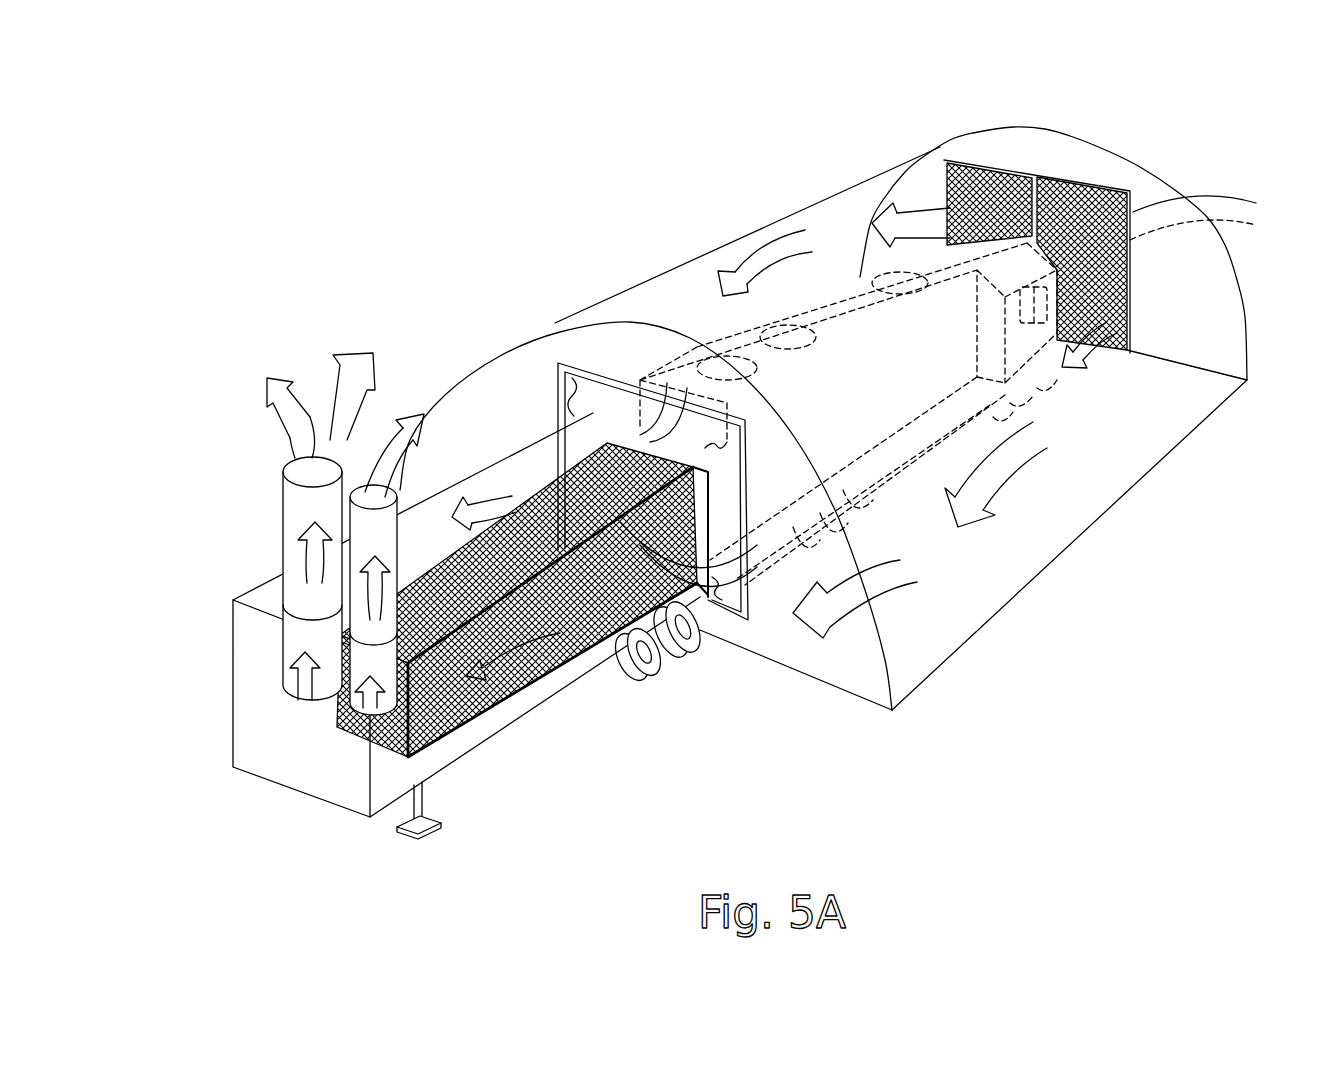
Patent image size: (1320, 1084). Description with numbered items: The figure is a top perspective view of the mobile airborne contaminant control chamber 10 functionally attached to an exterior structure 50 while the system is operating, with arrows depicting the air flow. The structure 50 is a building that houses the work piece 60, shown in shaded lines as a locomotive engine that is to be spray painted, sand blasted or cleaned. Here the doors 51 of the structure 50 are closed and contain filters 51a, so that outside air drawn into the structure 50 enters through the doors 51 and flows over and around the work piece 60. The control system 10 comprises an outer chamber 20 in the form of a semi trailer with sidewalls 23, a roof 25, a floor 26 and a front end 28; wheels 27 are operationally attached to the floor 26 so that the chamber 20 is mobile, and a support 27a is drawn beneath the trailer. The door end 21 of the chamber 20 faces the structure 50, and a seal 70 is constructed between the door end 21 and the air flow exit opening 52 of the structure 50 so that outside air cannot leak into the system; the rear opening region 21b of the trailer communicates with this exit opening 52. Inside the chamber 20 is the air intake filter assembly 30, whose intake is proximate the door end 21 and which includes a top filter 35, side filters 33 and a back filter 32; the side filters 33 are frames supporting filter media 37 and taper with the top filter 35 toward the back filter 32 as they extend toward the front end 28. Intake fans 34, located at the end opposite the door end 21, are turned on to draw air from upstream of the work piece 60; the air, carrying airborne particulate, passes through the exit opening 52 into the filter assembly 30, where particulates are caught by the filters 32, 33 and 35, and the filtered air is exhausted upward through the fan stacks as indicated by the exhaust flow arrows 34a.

The mobile airborne contaminant control chamber 10 is at (247, 490).
The outer chamber 20 is at (220, 537).
The door end 21 is at (625, 446).
The rear hatch opening 21b is at (556, 445).
The sidewall 23 is at (506, 715).
The roof 25 is at (421, 520).
The floor 26 is at (553, 688).
The wheels 27 is at (642, 684).
The support jack 27a is at (437, 814).
The front end 28 is at (300, 792).
The air intake filter assembly 30 is at (390, 437).
The back filter 32 is at (368, 745).
The side filter 33 is at (530, 684).
The intake fans 34 is at (343, 703).
The exhaust flow 34a is at (360, 580).
The top filter 35 is at (513, 455).
The filter media 37 is at (489, 707).
The exterior structure 50 is at (743, 233).
The door 51 is at (1093, 185).
The filters 51a is at (1130, 197).
The air flow exit opening 52 is at (633, 407).
The work piece 60 is at (907, 437).
The seal 70 is at (560, 360).